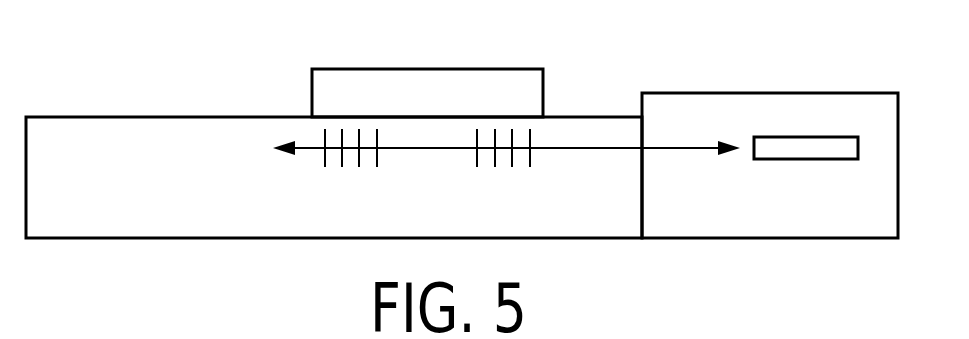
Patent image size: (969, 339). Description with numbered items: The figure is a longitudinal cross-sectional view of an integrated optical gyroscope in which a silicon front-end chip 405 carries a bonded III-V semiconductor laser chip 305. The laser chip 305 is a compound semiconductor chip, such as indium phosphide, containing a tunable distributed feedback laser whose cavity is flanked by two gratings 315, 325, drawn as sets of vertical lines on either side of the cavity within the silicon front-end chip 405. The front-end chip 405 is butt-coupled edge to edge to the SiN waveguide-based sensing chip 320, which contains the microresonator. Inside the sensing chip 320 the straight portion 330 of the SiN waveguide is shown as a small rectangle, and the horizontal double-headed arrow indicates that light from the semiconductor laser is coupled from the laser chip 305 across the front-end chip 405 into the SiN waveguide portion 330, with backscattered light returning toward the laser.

The laser chip 305 is at (418, 68).
The grating 315 is at (352, 172).
The grating 325 is at (502, 172).
The SiN waveguide chip 320 is at (797, 239).
The straight portion of the waveguide 330 is at (829, 162).
The front-end chip 405 is at (147, 240).